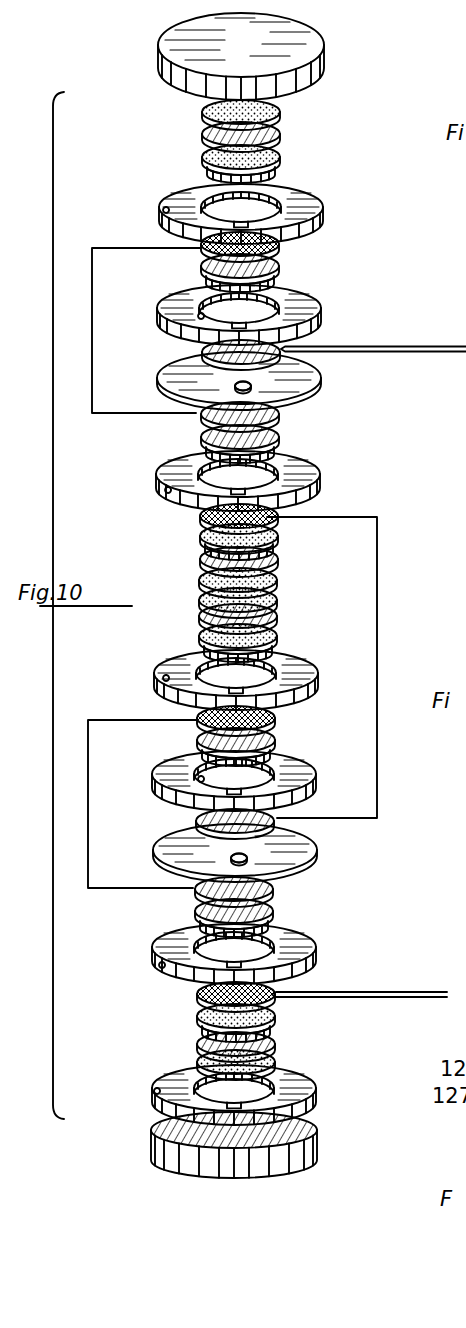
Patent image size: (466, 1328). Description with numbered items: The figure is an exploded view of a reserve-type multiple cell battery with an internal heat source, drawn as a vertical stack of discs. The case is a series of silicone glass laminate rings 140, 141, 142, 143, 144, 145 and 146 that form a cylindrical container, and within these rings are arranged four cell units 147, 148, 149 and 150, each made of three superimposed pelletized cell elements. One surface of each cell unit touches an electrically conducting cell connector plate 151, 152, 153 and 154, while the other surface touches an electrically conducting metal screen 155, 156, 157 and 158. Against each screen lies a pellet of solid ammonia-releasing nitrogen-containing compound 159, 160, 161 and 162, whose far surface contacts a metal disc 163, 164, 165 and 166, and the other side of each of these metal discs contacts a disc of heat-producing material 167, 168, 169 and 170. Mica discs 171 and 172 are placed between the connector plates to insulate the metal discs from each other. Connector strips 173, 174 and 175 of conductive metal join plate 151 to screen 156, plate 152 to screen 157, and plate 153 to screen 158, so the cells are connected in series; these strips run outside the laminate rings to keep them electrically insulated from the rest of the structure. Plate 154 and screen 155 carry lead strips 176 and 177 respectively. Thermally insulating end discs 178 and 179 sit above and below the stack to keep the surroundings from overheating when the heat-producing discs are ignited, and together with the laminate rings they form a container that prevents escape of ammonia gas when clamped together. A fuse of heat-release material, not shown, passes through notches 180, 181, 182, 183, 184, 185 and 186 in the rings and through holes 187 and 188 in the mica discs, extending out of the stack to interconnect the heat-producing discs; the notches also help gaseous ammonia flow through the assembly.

The silicone glass laminate ring 140 is at (317, 1087).
The silicone glass laminate ring 141 is at (300, 954).
The silicone glass laminate ring 142 is at (294, 777).
The silicone glass laminate ring 143 is at (305, 668).
The silicone glass laminate ring 144 is at (294, 478).
The silicone glass laminate ring 145 is at (303, 318).
The silicone glass laminate ring 146 is at (302, 210).
The cell unit 147 is at (286, 912).
The cell unit 148 is at (281, 740).
The cell unit 149 is at (285, 438).
The cell unit 150 is at (284, 271).
The cell connector plate 151 is at (281, 889).
The cell connector plate 152 is at (198, 821).
The cell connector plate 153 is at (273, 415).
The cell connector plate 154 is at (226, 357).
The electrically conducting metal screen 155 is at (196, 996).
The electrically conducting metal screen 156 is at (276, 718).
The electrically conducting metal screen 157 is at (206, 515).
The electrically conducting metal screen 158 is at (281, 246).
The ammonia-releasing compound pellet 159 is at (264, 1016).
The ammonia-releasing compound pellet 160 is at (273, 637).
The ammonia-releasing compound pellet 161 is at (271, 540).
The ammonia-releasing compound pellet 162 is at (278, 158).
The metal disc 163 is at (273, 1045).
The metal disc 164 is at (271, 615).
The metal disc 165 is at (269, 558).
The metal disc 166 is at (283, 131).
The disc of heat-producing material 167 is at (274, 1061).
The disc of heat-producing material 168 is at (271, 600).
The disc of heat-producing material 169 is at (259, 584).
The disc of heat-producing material 170 is at (273, 112).
The mica disc 171 is at (295, 850).
The mica disc 172 is at (298, 382).
The connector strip 173 is at (140, 890).
The connector strip 174 is at (378, 603).
The connector strip 175 is at (137, 414).
The lead strip 176 is at (370, 349).
The lead strip 177 is at (375, 992).
The thermally insulating end disc 178 is at (287, 43).
The thermally insulating end disc 179 is at (240, 1155).
The notch 180 is at (157, 1088).
The notch 181 is at (162, 962).
The notch 182 is at (201, 776).
The notch 183 is at (166, 675).
The notch 184 is at (168, 487).
The notch 185 is at (201, 313).
The notch 186 is at (166, 207).
The hole 187 is at (162, 860).
The hole 188 is at (233, 387).